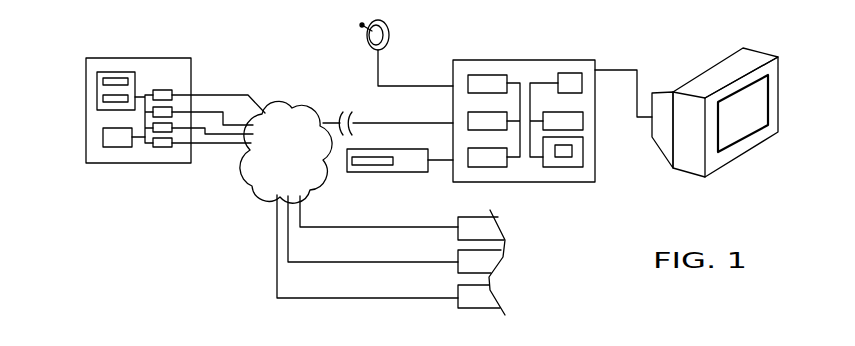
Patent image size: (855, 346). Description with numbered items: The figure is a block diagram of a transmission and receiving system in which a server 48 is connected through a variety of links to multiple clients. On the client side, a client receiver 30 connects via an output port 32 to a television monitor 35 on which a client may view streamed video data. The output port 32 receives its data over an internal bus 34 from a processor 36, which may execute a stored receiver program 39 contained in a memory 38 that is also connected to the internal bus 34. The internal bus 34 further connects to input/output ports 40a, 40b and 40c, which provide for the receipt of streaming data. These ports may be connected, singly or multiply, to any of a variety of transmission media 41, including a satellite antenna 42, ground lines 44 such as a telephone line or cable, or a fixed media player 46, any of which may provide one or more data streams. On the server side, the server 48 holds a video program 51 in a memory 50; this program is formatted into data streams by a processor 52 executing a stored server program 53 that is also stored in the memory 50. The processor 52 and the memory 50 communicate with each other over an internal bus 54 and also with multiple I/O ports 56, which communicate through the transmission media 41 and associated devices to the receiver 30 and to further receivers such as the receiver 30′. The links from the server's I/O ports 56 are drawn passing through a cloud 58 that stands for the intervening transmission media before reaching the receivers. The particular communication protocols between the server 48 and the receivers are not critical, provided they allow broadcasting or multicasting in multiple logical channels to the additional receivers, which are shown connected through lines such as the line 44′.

The client receiver 30 is at (538, 58).
The receiver 30′ is at (486, 227).
The output port 32 is at (568, 73).
The internal bus 34 is at (520, 157).
The television monitor 35 is at (727, 72).
The processor 36 is at (583, 118).
The memory 38 is at (583, 150).
The stored receiver program 39 is at (563, 157).
The input/output port 40a is at (485, 75).
The input/output port 40b is at (485, 112).
The input/output port 40c is at (480, 167).
The transmission media 41 is at (247, 257).
The satellite antenna 42 is at (365, 42).
The ground lines 44 is at (367, 115).
The line 44′ is at (332, 228).
The fixed media player 46 is at (390, 172).
The server 48 is at (184, 166).
The memory 50 is at (97, 95).
The video program 51 is at (115, 72).
The processor 52 is at (117, 147).
The stored server program 53 is at (100, 110).
The internal bus 54 is at (147, 97).
The I/O ports 56 is at (163, 147).
The network 58 is at (298, 160).